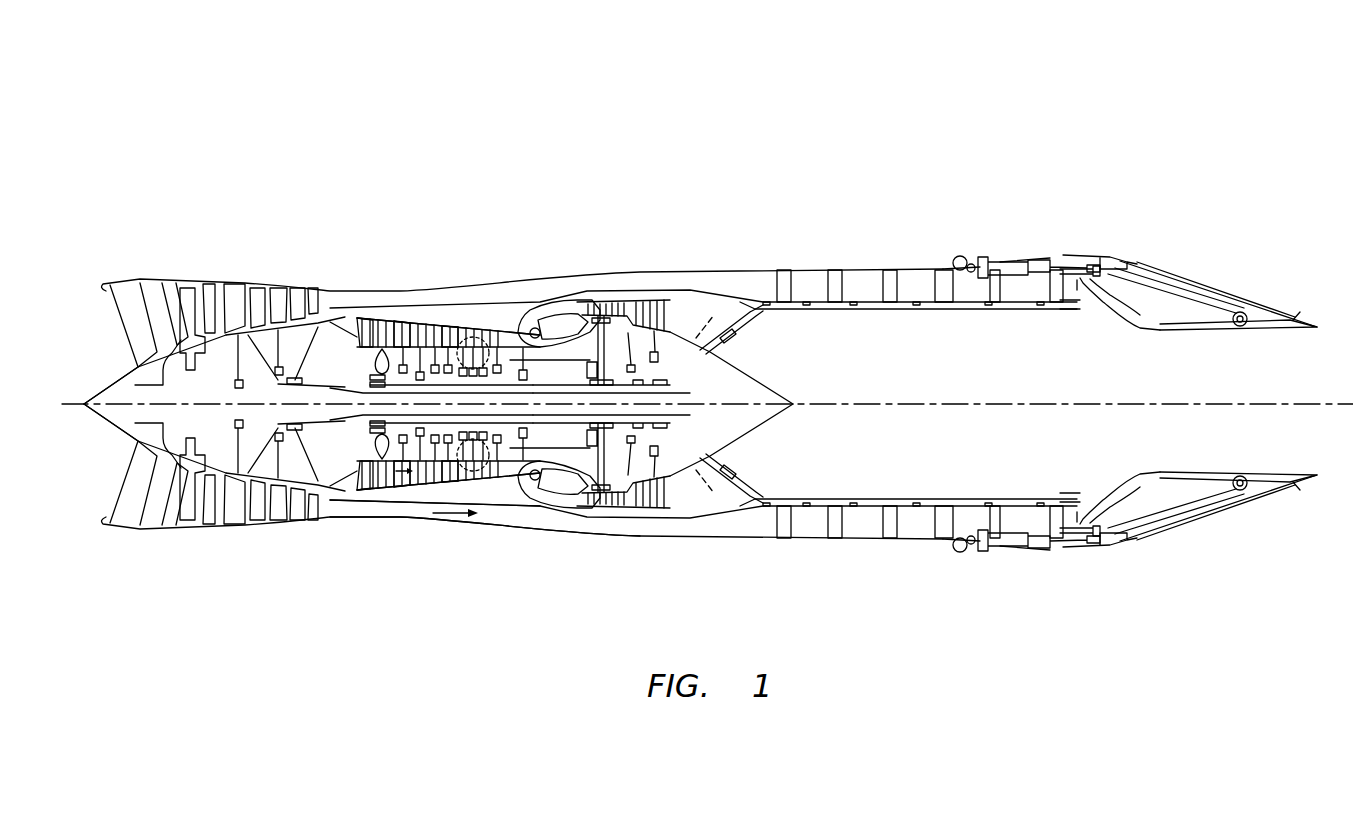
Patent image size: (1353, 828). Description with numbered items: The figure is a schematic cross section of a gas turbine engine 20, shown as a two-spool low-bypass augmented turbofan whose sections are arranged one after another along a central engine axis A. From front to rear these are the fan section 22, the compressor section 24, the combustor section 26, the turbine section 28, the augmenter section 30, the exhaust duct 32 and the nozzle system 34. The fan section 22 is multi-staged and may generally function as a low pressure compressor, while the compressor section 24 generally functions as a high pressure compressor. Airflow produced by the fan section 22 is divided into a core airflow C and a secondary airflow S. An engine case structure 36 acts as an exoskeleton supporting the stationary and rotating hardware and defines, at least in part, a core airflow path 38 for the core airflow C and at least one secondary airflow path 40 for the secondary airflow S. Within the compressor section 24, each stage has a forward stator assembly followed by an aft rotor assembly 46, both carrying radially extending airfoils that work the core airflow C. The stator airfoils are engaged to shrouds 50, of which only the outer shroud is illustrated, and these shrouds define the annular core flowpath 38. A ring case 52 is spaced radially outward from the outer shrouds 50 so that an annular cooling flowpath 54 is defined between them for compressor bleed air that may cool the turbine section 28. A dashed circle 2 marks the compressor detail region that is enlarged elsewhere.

The gas turbine engine 20 is at (966, 115).
The fan section 22 is at (103, 214).
The compressor section 24 is at (527, 214).
The combustor section 26 is at (597, 214).
The turbine section 28 is at (672, 214).
The augmenter section 30 is at (672, 214).
The exhaust duct 32 is at (1068, 214).
The nozzle system 34 is at (1068, 214).
The engine case structure 36 is at (531, 538).
The core airflow path 38 is at (309, 503).
The secondary airflow path 40 is at (396, 512).
The rotor assembly 46 is at (402, 323).
The outer shroud 50 is at (412, 326).
The ring case 52 is at (427, 305).
The annular cooling flowpath 54 is at (450, 318).
The detail region 2 is at (480, 333).
The central engine axis A is at (986, 405).
The core airflow C is at (391, 477).
The secondary airflow S is at (453, 518).